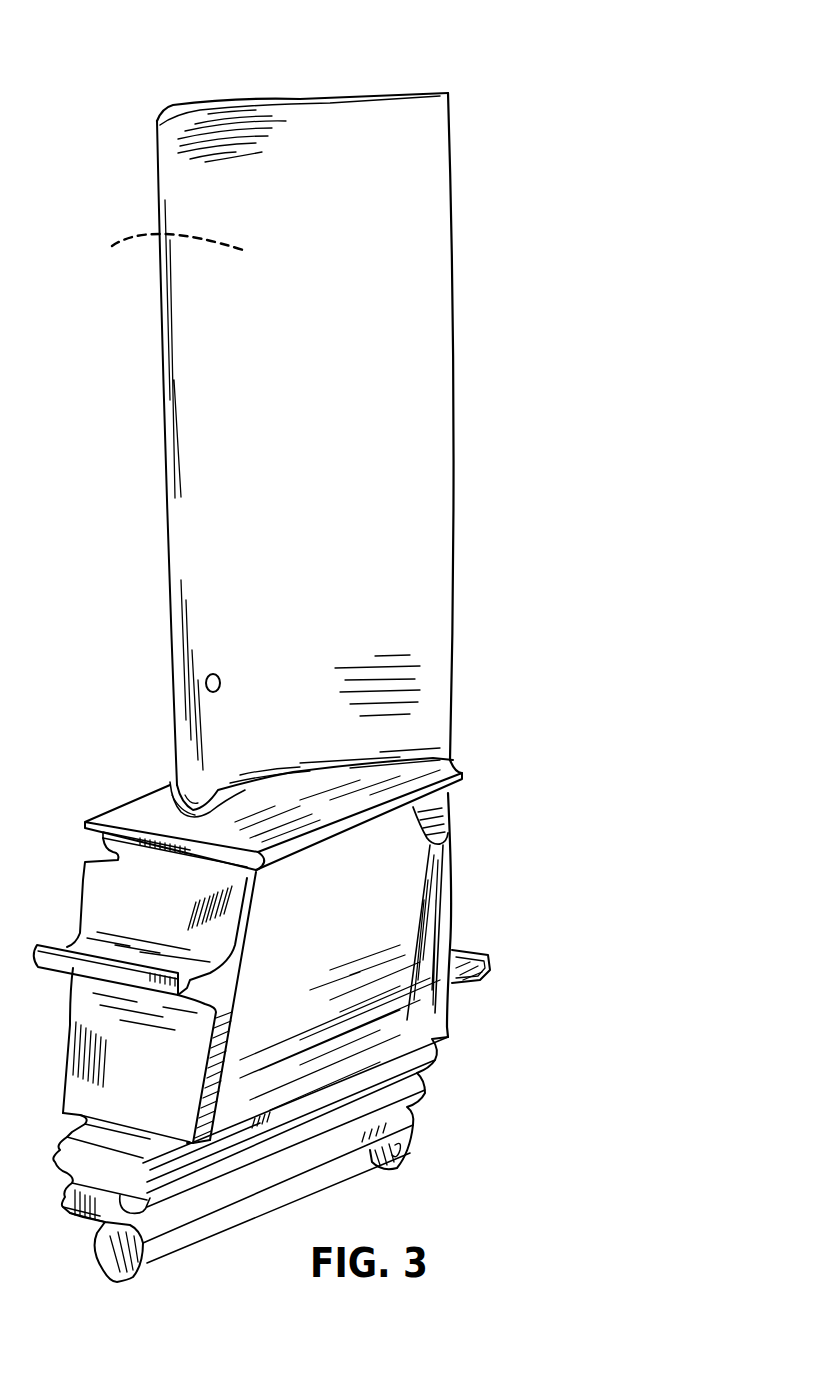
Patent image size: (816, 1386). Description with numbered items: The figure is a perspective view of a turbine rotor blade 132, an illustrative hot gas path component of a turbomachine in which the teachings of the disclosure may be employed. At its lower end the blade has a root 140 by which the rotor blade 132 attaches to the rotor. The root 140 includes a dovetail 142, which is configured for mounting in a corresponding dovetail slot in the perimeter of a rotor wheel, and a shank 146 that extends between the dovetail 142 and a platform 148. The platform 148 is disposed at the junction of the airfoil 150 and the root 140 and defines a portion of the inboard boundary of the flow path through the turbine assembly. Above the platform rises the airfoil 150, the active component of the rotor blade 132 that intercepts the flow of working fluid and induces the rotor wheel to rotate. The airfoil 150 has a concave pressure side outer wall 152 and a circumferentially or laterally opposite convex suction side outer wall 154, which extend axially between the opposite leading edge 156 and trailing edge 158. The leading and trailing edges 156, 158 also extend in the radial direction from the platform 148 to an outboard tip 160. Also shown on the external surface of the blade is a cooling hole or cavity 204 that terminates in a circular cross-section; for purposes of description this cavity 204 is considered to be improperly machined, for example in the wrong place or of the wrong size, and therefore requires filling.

The turbine rotor blade 132 is at (549, 98).
The root 140 is at (479, 1066).
The dovetail 142 is at (160, 1205).
The shank 146 is at (342, 900).
The platform 148 is at (174, 838).
The airfoil 150 is at (345, 514).
The pressure side outer wall 152 is at (465, 563).
The suction side outer wall 154 is at (154, 248).
The leading edge 156 is at (166, 420).
The trailing edge 158 is at (455, 449).
The outboard tip 160 is at (238, 106).
The cooling hole or cavity 204 is at (206, 683).